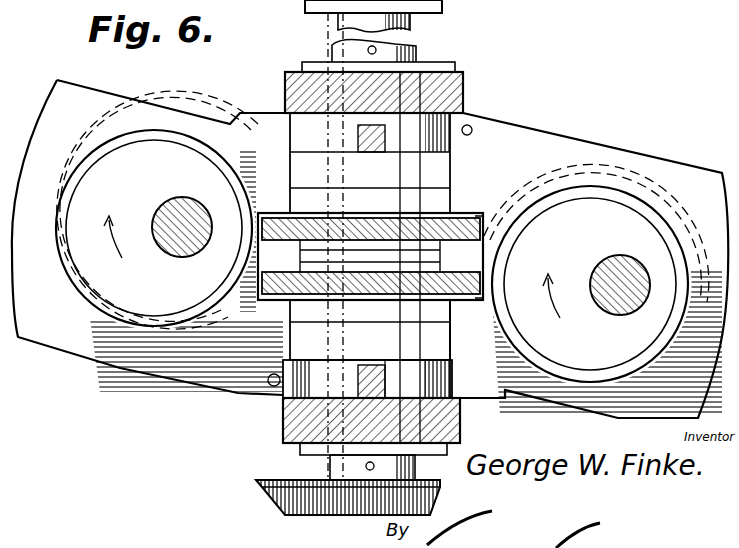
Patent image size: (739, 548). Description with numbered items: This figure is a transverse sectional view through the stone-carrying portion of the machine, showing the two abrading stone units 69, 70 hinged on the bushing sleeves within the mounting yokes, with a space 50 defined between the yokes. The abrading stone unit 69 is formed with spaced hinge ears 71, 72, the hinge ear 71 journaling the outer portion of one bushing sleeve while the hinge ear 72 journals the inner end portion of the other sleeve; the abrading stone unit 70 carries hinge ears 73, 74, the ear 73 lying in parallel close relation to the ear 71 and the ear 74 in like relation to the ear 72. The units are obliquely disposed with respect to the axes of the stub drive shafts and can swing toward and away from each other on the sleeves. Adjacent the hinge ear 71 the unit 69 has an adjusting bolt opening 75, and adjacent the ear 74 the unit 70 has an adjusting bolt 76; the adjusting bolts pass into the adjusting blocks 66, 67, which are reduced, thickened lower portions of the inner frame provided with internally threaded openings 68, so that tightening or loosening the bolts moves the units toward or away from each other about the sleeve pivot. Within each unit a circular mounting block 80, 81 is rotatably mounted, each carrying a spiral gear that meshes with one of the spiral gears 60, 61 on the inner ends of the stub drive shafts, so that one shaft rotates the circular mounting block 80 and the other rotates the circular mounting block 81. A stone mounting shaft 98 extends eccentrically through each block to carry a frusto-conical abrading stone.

The space between yokes 50 is at (485, 326).
The spiral gear 60 is at (286, 318).
The spiral gear 61 is at (478, 211).
The adjusting block 66 is at (358, 147).
The adjusting block 67 is at (386, 370).
The internally threaded opening 68 is at (365, 365).
The abrading stone unit 69 is at (128, 106).
The abrading stone unit 70 is at (644, 163).
The hinge ear 71 is at (283, 402).
The hinge ear 72 is at (318, 167).
The hinge ear 73 is at (310, 336).
The hinge ear 74 is at (462, 102).
The adjusting bolt opening 75 is at (269, 386).
The adjusting bolt 76 is at (472, 128).
The circular mounting block 80 is at (157, 210).
The circular mounting block 81 is at (577, 348).
The stone mounting shaft 98 is at (165, 222).